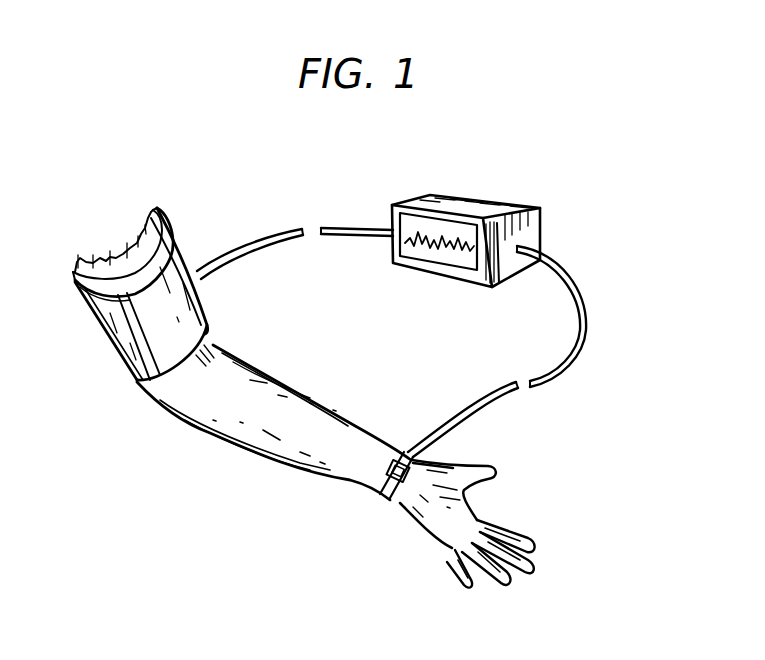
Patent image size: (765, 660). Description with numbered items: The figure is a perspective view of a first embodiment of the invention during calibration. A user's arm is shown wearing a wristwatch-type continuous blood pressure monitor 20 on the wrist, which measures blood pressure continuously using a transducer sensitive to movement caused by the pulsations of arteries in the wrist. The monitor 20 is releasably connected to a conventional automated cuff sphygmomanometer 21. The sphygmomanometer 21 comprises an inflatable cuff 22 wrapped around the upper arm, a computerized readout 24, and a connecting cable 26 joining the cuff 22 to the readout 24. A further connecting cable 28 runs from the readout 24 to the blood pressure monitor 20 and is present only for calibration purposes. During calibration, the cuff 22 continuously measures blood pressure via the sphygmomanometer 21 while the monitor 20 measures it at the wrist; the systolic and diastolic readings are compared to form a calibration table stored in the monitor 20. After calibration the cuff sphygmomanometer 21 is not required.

The wristwatch-type continuous blood pressure monitor 20 is at (398, 502).
The automated cuff sphygmomanometer 21 is at (310, 178).
The inflatable cuff 22 is at (115, 356).
The computerized readout 24 is at (515, 205).
The connecting cable 26 is at (338, 213).
The connecting cable 28 is at (568, 363).